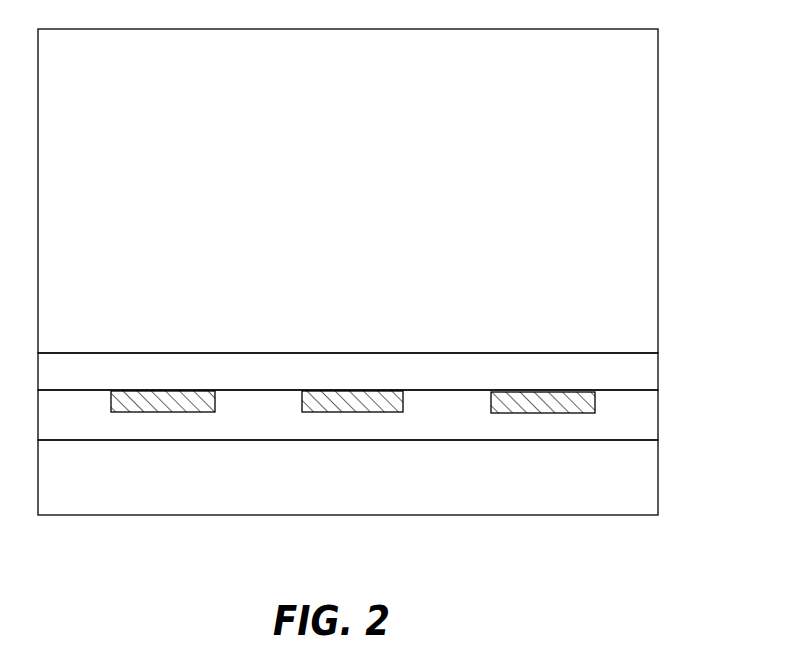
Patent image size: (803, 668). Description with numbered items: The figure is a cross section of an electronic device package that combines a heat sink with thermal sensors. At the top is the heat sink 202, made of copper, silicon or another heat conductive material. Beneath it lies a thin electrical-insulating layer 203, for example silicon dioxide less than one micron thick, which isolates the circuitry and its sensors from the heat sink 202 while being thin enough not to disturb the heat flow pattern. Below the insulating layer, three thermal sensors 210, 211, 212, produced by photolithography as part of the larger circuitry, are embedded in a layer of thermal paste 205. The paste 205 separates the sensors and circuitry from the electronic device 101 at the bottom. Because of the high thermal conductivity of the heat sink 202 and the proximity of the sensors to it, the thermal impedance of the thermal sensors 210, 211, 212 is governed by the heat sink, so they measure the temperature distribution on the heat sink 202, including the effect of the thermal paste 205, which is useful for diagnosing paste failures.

The heat sink 202 is at (658, 157).
The electrical-insulating layer 203 is at (658, 372).
The thermal paste 205 is at (658, 424).
The electronic device 101 is at (658, 476).
The thermal sensor 210 is at (160, 413).
The thermal sensor 211 is at (312, 413).
The thermal sensor 212 is at (540, 413).